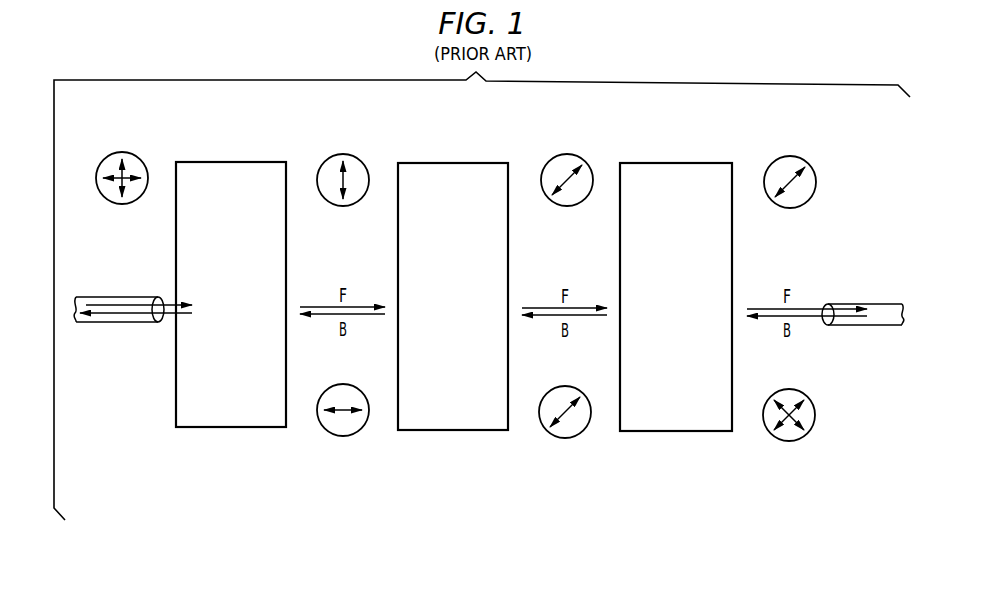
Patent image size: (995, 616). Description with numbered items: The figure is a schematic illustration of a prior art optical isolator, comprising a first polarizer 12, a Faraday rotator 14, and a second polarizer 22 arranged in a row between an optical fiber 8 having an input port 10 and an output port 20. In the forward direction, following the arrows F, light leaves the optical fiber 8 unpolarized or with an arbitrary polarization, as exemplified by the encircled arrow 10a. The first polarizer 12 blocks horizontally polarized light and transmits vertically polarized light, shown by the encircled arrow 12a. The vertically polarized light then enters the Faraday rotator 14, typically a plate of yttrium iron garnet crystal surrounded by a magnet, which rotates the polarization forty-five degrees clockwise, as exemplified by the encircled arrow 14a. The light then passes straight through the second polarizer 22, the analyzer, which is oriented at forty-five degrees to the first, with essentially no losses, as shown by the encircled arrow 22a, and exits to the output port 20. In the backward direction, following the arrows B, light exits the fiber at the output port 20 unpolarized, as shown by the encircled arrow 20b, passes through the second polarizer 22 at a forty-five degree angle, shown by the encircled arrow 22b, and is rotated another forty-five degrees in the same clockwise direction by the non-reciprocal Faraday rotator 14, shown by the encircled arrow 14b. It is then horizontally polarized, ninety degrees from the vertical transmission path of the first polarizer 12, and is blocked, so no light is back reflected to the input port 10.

The optical fiber 8 is at (89, 297).
The input port 10 is at (157, 297).
The encircled arrow 10a is at (122, 152).
The first polarizer 12 is at (226, 428).
The encircled arrow 12a is at (343, 154).
The Faraday rotator 14 is at (449, 431).
The encircled arrow 14a is at (566, 154).
The encircled arrow 14b is at (343, 437).
The output port 20 is at (834, 304).
The backward polarization state at output (unpolarized/blocked) 20b is at (789, 442).
The second polarizer 22 is at (672, 432).
The encircled arrow 22a is at (789, 156).
The encircled arrow 22b is at (564, 439).